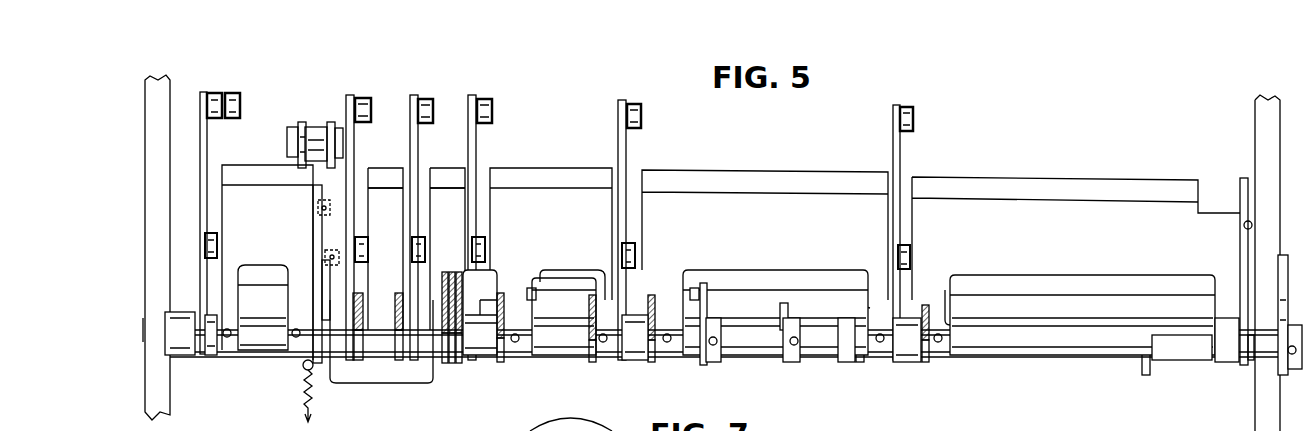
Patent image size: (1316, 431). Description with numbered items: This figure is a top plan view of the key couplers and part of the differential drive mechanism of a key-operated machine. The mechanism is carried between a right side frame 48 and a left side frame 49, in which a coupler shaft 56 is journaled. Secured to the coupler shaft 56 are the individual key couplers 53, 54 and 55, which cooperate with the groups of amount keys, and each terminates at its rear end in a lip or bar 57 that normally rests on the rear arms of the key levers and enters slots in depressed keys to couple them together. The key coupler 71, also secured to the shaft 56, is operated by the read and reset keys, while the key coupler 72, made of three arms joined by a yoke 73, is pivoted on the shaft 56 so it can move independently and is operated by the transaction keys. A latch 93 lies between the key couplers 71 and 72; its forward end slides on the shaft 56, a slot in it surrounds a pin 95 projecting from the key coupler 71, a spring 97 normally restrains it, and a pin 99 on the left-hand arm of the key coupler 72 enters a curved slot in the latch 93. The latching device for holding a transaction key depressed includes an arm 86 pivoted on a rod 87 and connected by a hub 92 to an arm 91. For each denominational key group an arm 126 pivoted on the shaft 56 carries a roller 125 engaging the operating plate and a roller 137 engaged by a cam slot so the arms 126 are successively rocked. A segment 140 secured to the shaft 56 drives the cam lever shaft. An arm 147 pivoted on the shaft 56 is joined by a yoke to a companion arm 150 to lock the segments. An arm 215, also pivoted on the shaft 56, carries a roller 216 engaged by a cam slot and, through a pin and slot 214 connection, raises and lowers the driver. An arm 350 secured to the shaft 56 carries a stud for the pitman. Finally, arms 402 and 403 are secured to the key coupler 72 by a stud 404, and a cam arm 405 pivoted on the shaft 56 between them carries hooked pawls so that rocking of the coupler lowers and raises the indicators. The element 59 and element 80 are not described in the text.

The right side frame 48 is at (1262, 136).
The left side frame 49 is at (160, 385).
The key coupler 53 is at (1082, 290).
The key coupler 54 is at (765, 288).
The key coupler 55 is at (570, 282).
The coupler shaft 56 is at (1034, 348).
The lip or bar 57 is at (252, 176).
The end post 59 is at (1243, 197).
The key coupler 71 is at (262, 272).
The key coupler 72 is at (438, 207).
The yoke 73 is at (373, 372).
The panel 80 is at (378, 172).
The arm 86 is at (332, 120).
The rod 87 is at (287, 135).
The arm 91 is at (301, 120).
The hub 92 is at (313, 124).
The latch 93 is at (313, 232).
The pin 95 is at (296, 255).
The spring 97 is at (305, 380).
The pin 99 is at (316, 206).
The roller 125 is at (907, 110).
The arm 126 is at (354, 136).
The roller 137 is at (361, 240).
The segment 140 is at (1280, 375).
The arm 147 is at (500, 362).
The companion arm 150 is at (592, 362).
The slot 214 is at (222, 97).
The arm 215 is at (205, 150).
The roller 216 is at (210, 245).
The arm 350 is at (540, 275).
The arm 402 is at (445, 365).
The arm 403 is at (459, 365).
The stud 404 is at (455, 272).
The cam arm 405 is at (452, 365).